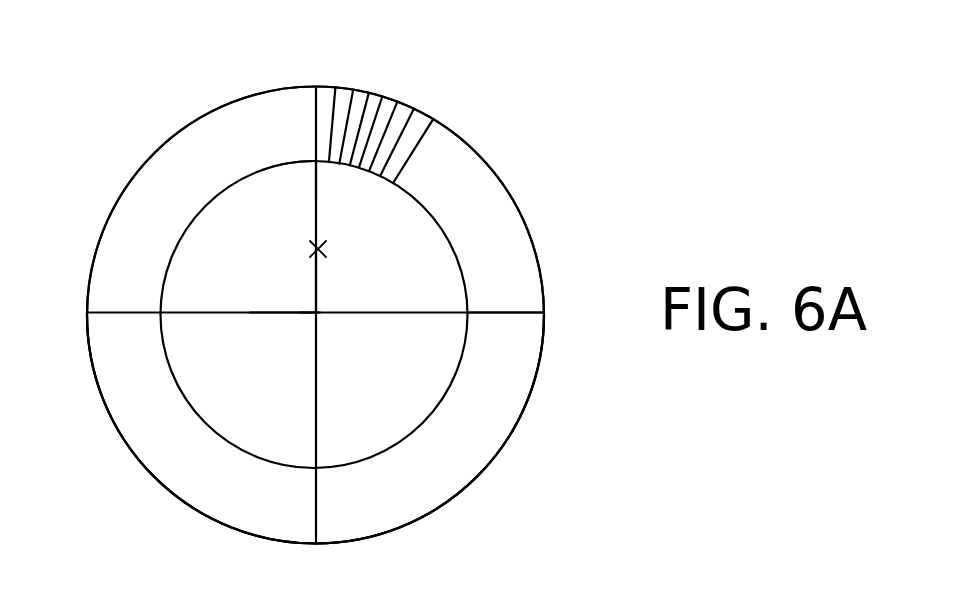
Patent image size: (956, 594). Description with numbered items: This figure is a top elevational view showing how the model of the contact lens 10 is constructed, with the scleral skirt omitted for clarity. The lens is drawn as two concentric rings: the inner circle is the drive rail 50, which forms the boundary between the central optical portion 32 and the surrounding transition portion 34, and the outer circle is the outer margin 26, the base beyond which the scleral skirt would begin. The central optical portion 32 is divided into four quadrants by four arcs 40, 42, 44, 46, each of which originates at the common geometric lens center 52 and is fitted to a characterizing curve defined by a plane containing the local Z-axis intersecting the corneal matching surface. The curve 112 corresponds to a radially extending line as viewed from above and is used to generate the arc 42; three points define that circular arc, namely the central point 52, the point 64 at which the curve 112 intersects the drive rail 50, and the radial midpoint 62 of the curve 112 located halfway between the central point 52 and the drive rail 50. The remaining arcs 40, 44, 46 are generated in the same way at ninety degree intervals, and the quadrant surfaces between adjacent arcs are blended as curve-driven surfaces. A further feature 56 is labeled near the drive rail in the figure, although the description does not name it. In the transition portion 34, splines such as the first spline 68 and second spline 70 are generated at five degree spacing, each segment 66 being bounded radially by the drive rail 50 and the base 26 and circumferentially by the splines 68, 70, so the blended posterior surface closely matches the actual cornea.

The lens 10 is at (125, 175).
The outer margin 26 is at (522, 423).
The central optical portion 32 is at (223, 430).
The transition portion 34 is at (128, 405).
The arc 40 is at (313, 273).
The arc 42 is at (362, 313).
The arc 44 is at (316, 350).
The arc 46 is at (265, 312).
The drive rail 50 is at (385, 453).
The geometric lens center 52 is at (310, 313).
The inner circle segment 56 is at (300, 164).
The radial midpoint 62 is at (313, 250).
The intersection point 64 is at (313, 190).
The segment 66 is at (347, 103).
The first spline 68 is at (327, 100).
The second spline 70 is at (362, 103).
The curve 112 is at (495, 312).